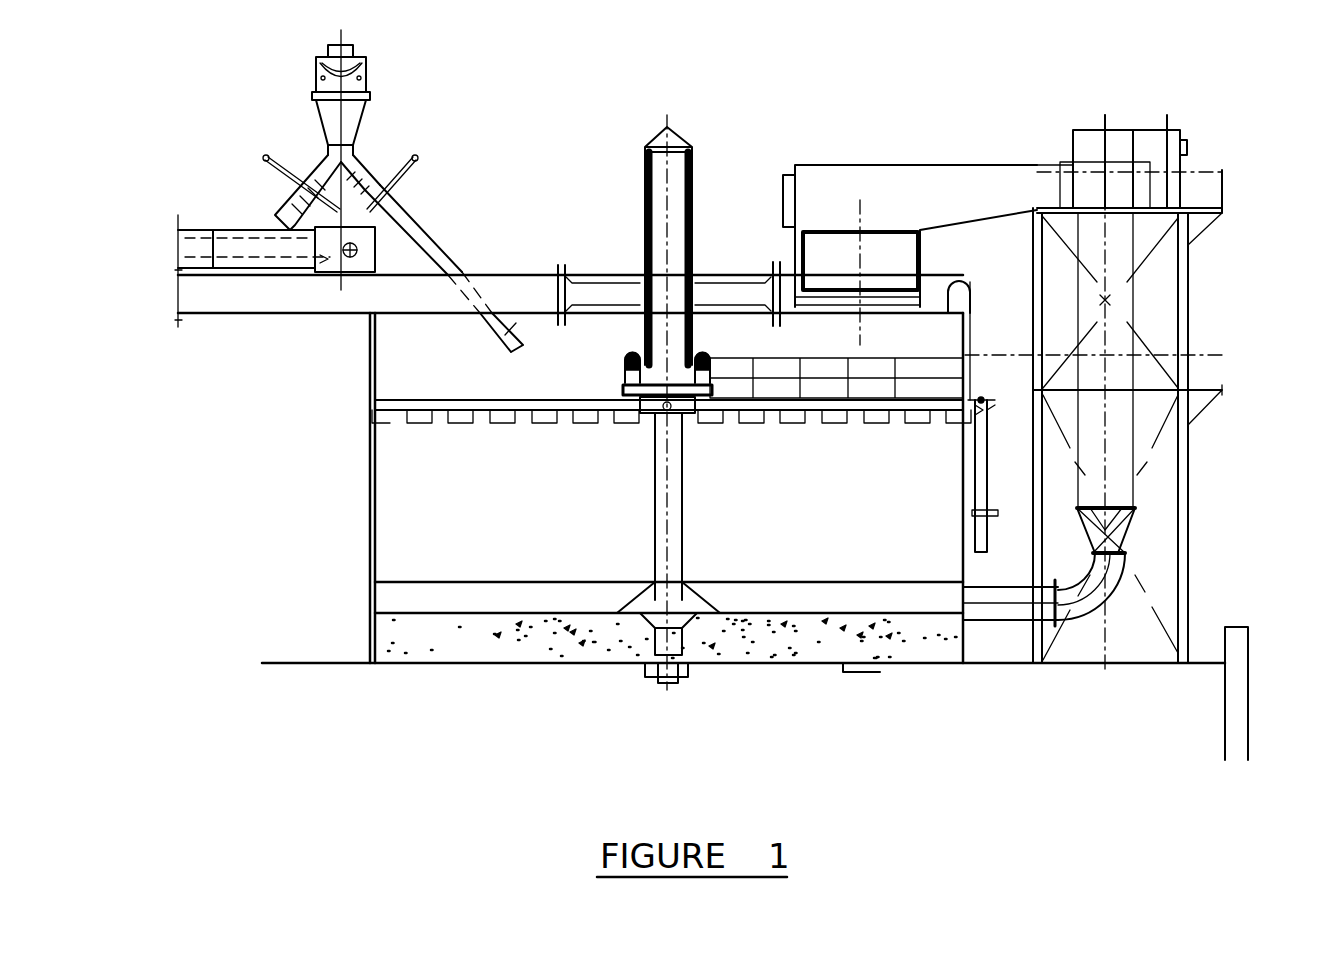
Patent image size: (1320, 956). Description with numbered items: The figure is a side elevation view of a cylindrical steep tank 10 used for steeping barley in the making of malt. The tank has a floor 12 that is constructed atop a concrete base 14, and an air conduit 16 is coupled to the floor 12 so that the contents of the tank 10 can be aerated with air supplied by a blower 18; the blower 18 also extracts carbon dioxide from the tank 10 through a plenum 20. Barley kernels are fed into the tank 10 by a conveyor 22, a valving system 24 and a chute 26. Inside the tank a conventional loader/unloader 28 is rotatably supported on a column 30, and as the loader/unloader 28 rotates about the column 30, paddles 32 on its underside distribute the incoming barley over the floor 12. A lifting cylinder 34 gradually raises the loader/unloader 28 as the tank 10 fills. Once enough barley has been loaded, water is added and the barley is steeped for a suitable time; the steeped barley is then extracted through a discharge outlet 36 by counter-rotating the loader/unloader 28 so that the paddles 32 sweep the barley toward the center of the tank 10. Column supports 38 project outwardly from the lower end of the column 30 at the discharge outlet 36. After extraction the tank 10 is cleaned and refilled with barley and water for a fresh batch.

The steep tank 10 is at (368, 565).
The floor 12 is at (830, 580).
The concrete base 14 is at (425, 640).
The air conduit 16 is at (998, 622).
The blower 18 is at (1185, 185).
The plenum 20 is at (968, 165).
The conveyor 22 is at (280, 258).
The valving system 24 is at (355, 147).
The chute 26 is at (430, 228).
The loader/unloader 28 is at (480, 400).
The column 30 is at (682, 477).
The paddles 32 is at (415, 427).
The lifting cylinder 34 is at (695, 235).
The discharge outlet 36 is at (665, 683).
The column supports 38 is at (652, 612).